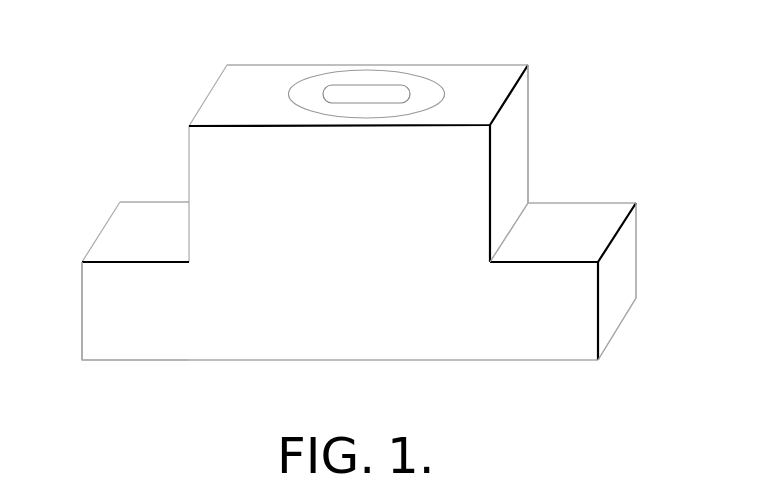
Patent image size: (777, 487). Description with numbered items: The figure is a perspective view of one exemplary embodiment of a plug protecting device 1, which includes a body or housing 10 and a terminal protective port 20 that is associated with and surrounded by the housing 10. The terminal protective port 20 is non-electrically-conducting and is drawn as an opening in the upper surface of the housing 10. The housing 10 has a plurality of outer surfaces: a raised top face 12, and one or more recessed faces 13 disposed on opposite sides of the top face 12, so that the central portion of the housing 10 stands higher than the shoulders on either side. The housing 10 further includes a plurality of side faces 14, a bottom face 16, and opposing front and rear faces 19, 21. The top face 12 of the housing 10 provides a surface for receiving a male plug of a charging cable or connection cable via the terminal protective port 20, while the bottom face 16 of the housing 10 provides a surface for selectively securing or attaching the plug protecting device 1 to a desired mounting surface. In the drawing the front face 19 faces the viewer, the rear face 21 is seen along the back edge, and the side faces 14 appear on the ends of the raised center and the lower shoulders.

The plug protecting device 1 is at (187, 44).
The housing 10 is at (206, 152).
The raised top face 12 is at (462, 70).
The recessed faces 13 is at (577, 215).
The side faces 14 is at (513, 150).
The bottom face 16 is at (397, 360).
The front face 19 is at (213, 348).
The terminal protective port 20 is at (363, 66).
The rear face 21 is at (530, 102).